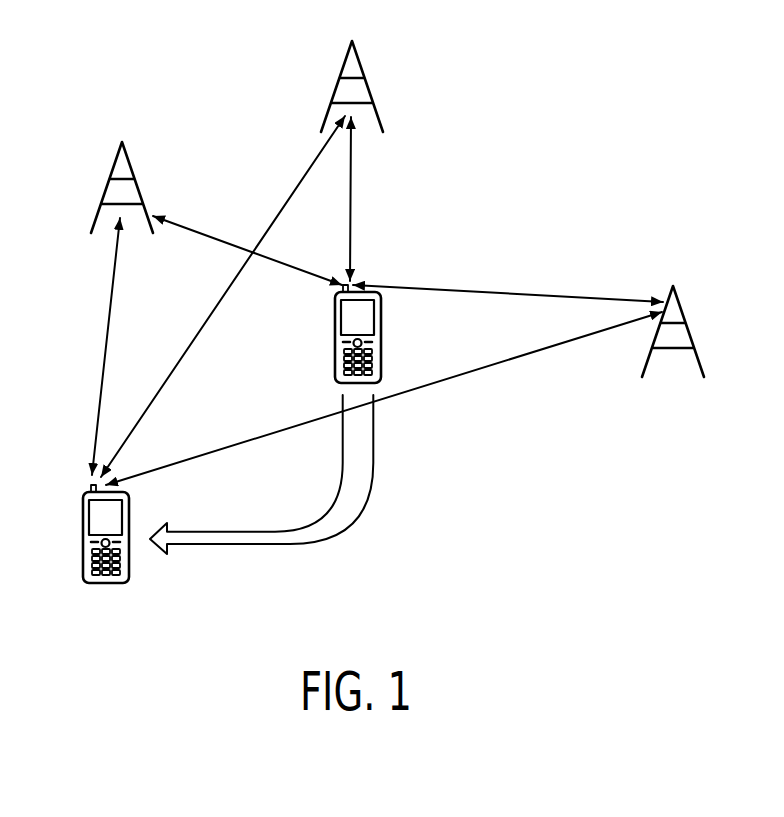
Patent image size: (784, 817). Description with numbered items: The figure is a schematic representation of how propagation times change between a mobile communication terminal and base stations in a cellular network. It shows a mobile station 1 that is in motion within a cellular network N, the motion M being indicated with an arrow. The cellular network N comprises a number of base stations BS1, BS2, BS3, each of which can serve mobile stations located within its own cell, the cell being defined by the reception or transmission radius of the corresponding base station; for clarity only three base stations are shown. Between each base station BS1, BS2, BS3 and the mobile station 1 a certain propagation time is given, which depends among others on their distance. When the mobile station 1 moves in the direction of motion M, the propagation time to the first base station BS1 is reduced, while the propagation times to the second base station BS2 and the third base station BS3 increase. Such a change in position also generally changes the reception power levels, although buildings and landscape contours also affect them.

The mobile station 1 is at (376, 360).
The first base station BS1 is at (134, 178).
The second base station BS2 is at (368, 82).
The third base station BS3 is at (690, 330).
The cellular network N is at (608, 118).
The motion M is at (314, 529).